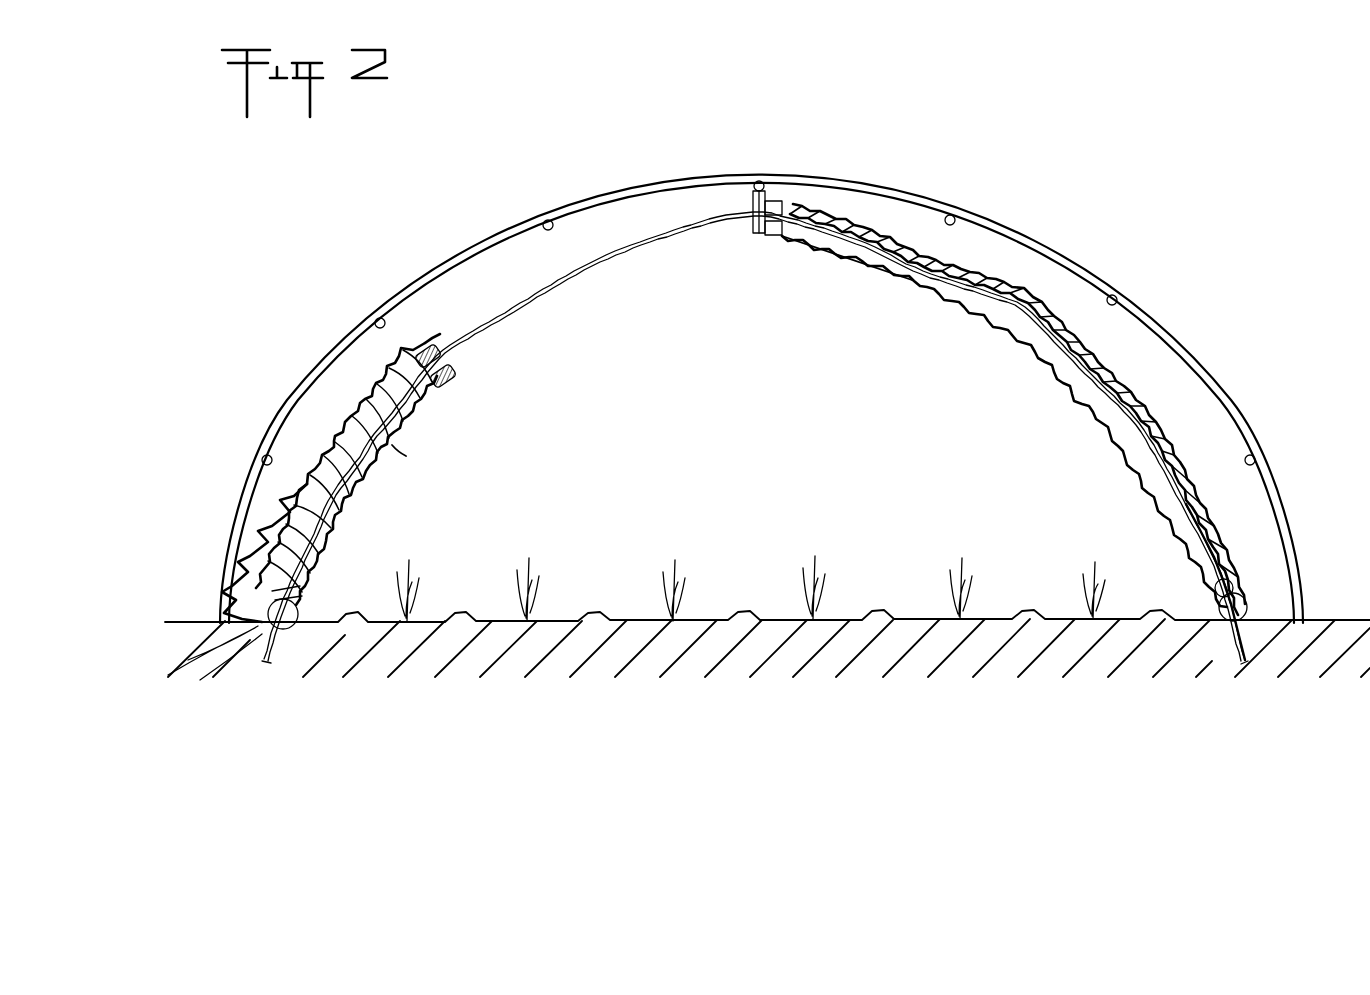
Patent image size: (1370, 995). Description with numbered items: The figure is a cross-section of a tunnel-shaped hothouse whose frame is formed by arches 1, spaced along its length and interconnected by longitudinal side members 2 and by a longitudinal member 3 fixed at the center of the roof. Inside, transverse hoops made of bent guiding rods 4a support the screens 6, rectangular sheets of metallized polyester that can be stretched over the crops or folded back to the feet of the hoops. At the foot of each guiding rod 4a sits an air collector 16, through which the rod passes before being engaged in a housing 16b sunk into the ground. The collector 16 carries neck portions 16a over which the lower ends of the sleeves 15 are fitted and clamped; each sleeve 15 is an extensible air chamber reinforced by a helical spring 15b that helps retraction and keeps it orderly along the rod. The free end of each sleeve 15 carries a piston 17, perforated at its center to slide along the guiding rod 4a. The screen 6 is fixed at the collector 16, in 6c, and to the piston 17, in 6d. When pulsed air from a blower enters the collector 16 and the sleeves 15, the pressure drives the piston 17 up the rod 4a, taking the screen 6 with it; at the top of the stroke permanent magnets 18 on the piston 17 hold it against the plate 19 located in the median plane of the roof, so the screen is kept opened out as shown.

The arch 1 is at (485, 236).
The longitudinal side member 2 is at (553, 228).
The longitudinal member 3 is at (763, 182).
The bent rod 4a is at (503, 316).
The screen 6 is at (353, 425).
The screen fixing point at collector 6c is at (257, 636).
The screen fixing point at piston 6d is at (430, 335).
The sleeve 15 is at (385, 473).
The helical spring 15b is at (392, 445).
The air collector 16 is at (298, 635).
The neck portion 16a is at (302, 600).
The housing 16b is at (266, 650).
The piston 17 is at (780, 238).
The permanent magnet 18 is at (765, 236).
The plate 19 is at (750, 232).